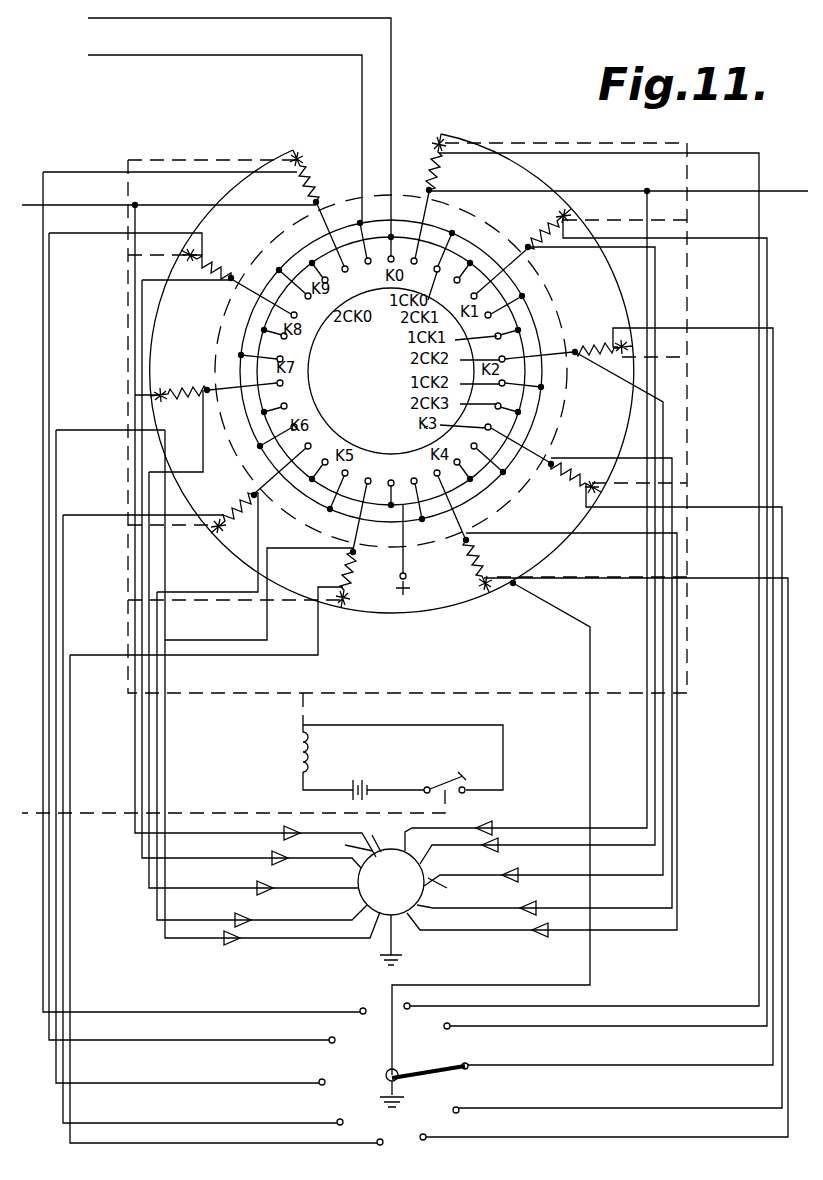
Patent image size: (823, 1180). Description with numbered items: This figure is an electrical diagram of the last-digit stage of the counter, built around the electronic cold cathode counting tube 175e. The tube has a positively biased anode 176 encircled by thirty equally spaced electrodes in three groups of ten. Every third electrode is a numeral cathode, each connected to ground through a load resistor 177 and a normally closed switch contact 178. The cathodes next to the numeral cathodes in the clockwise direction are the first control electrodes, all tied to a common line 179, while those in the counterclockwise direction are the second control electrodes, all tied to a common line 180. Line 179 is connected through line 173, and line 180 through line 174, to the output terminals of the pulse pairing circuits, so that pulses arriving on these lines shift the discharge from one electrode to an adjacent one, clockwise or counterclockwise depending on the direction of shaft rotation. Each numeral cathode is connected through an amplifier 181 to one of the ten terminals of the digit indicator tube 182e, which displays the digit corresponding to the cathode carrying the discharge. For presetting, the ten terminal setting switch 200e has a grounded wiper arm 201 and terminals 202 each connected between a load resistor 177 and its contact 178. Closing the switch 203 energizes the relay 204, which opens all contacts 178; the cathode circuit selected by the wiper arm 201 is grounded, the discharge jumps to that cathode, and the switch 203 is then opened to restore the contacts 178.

The line 173 is at (208, 135).
The line 174 is at (223, 124).
The cold cathode counting tube 175e is at (485, 126).
The anode 176 is at (362, 393).
The load resistor 177 is at (438, 166).
The normally closed switch contact 178 is at (438, 147).
The common line 179 is at (520, 244).
The common line 180 is at (300, 234).
The amplifier 181 is at (490, 826).
The digit indicator tube 182e is at (424, 866).
The setting switch 200e is at (370, 993).
The wiper arm 201 is at (426, 1068).
The terminal 202 is at (470, 1064).
The switch 203 is at (455, 782).
The relay 204 is at (312, 761).